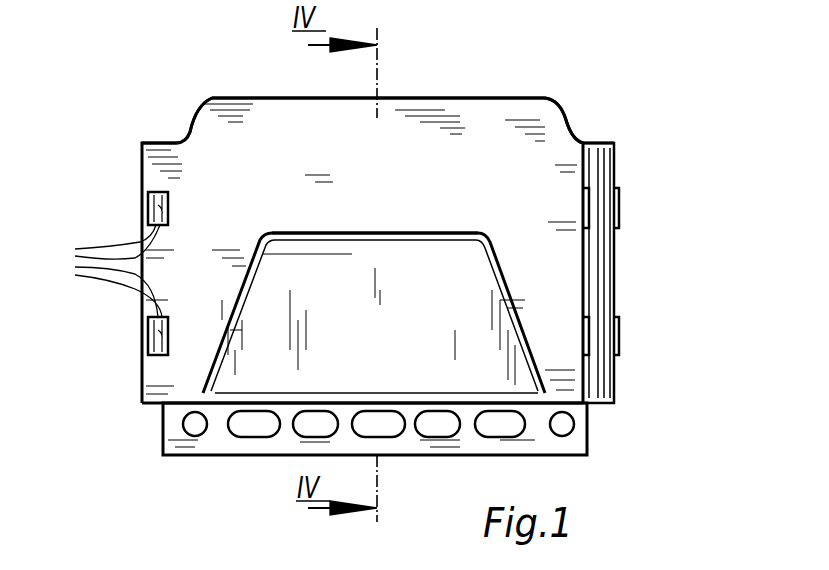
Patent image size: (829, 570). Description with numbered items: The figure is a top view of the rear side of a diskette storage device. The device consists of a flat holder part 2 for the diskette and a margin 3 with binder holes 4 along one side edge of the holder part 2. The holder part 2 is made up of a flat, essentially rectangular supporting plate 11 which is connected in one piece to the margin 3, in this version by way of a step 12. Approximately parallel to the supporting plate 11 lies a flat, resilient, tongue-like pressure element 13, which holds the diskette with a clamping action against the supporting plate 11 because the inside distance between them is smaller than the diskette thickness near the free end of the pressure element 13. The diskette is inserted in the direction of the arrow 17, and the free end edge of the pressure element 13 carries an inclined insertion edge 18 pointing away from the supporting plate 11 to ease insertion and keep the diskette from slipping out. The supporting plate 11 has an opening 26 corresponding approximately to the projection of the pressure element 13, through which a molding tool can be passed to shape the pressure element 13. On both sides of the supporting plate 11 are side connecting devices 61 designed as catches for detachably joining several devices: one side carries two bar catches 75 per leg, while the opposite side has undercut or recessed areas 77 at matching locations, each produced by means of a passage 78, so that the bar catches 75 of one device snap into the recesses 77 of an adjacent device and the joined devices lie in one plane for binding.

The holder part 2 is at (130, 400).
The margin 3 is at (160, 440).
The holes 4 is at (310, 430).
The supporting plate 11 is at (510, 115).
The step 12 is at (576, 410).
The pressure element 13 is at (408, 337).
The arrow 17 is at (396, 88).
The inclined insertion edge 18 is at (438, 240).
The opening 26 is at (290, 232).
The side connecting devices 61 is at (140, 138).
The bar catches 75 is at (583, 215).
The undercut or recessed areas 77 is at (101, 271).
The passage 78 is at (150, 203).